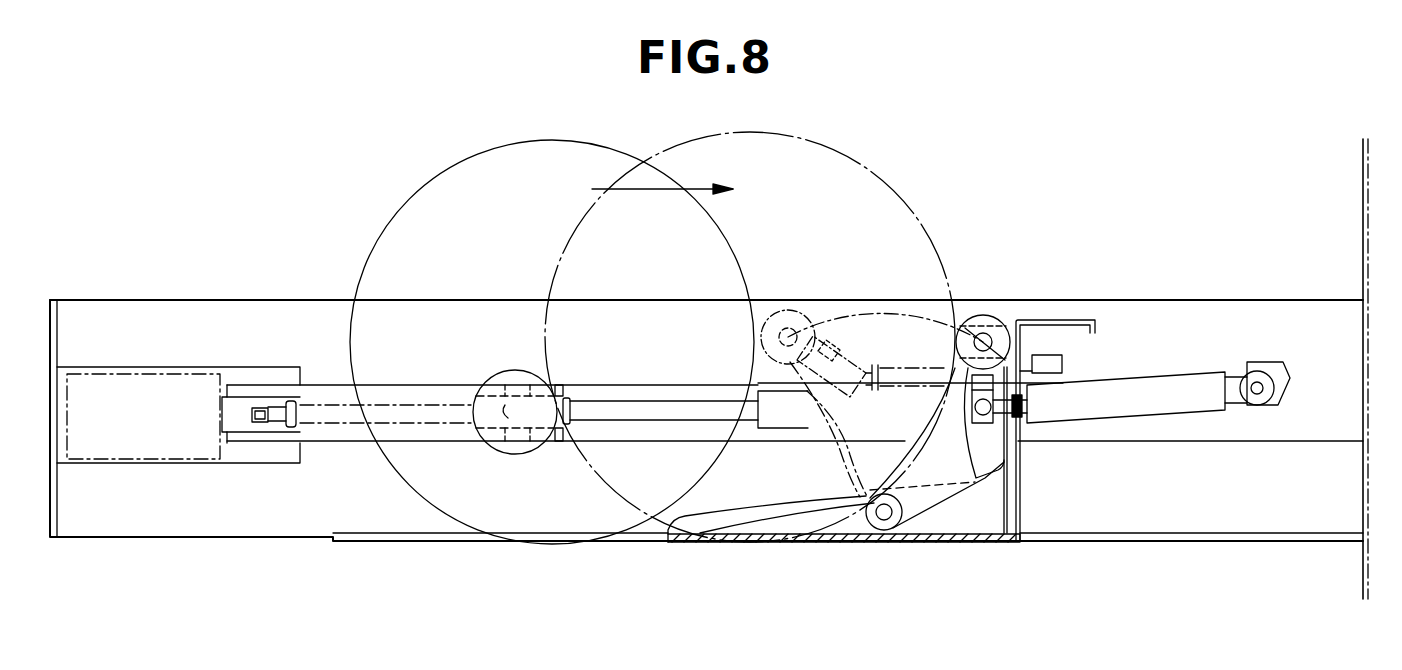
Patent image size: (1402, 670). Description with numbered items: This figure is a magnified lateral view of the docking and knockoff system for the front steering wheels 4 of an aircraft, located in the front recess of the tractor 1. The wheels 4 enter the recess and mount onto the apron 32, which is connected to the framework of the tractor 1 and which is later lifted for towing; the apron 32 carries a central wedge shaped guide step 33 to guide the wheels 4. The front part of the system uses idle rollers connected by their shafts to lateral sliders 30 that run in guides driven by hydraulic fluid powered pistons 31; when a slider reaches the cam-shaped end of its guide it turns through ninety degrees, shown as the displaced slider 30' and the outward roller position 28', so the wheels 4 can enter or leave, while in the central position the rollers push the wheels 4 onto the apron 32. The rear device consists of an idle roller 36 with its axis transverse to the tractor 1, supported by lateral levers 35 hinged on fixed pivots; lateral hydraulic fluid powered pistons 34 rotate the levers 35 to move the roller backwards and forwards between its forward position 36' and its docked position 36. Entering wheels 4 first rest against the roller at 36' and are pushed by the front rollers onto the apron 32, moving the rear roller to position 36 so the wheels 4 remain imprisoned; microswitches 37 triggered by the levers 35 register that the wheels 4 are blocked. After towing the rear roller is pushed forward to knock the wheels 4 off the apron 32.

The tractor 1 is at (1211, 311).
The front steering wheels 4 is at (588, 173).
The idle roller position 28' is at (143, 357).
The lateral slider 30' is at (354, 371).
The lateral slider 30 is at (521, 390).
The hydraulic fluid powered piston 31 is at (775, 417).
The apron 32 is at (880, 540).
The central wedge shaped guide step 33 is at (987, 515).
The hydraulic fluid powered piston 34 is at (1193, 390).
The lateral lever 35 is at (985, 457).
The idle roller 36 is at (983, 312).
The idle roller position 36' is at (872, 326).
The microswitch 37 is at (1047, 355).